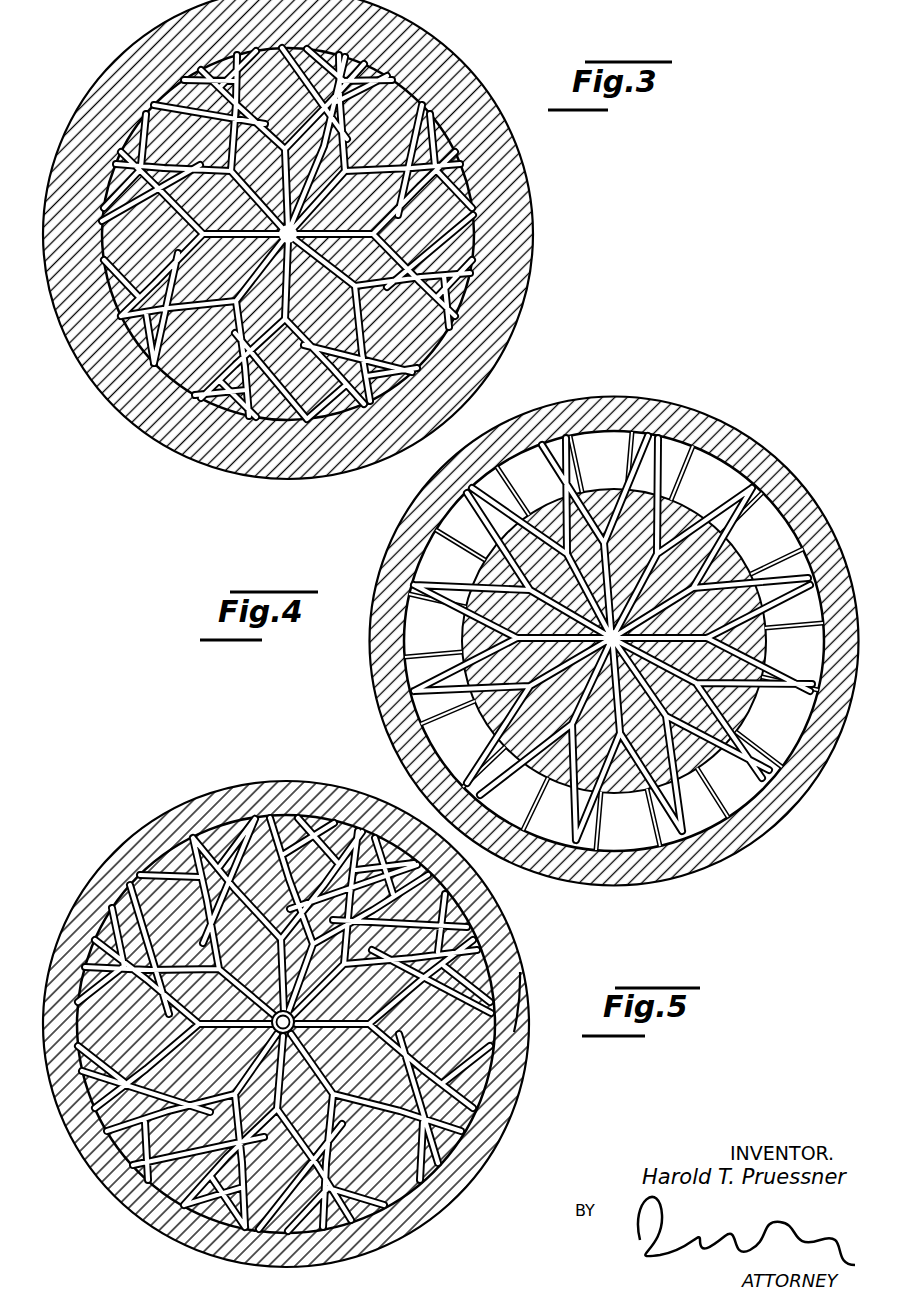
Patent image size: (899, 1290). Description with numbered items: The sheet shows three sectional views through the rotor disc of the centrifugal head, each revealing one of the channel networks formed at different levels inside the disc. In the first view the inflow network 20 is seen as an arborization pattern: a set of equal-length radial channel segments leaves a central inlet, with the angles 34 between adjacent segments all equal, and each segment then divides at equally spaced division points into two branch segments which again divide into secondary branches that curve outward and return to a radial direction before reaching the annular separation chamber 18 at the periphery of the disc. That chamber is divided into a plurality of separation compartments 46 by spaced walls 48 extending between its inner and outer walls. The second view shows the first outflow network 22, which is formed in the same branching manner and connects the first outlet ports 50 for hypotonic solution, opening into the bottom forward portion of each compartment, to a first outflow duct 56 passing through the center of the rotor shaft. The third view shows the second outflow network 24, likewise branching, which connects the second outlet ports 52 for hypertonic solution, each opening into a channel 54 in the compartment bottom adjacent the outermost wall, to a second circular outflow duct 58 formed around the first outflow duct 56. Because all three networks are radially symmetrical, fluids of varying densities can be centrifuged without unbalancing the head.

In FIG. 3, the annular separation chamber 18 is at (250, 422).
In FIG. 4, the annular separation chamber 18 is at (795, 512).
In FIG. 5, the annular separation chamber 18 is at (286, 1024).
In FIG. 3, the inflow network 20 is at (261, 32).
In FIG. 4, the first outflow network 22 is at (648, 568).
In FIG. 5, the second outflow network 24 is at (366, 1010).
In FIG. 3, the angles 34 is at (300, 262).
In FIG. 3, the separation compartments 46 is at (245, 52).
In FIG. 4, the separation compartments 46 is at (588, 436).
In FIG. 5, the separation compartments 46 is at (262, 792).
In FIG. 3, the spaced walls 48 is at (300, 46).
In FIG. 4, the spaced walls 48 is at (545, 500).
In FIG. 5, the spaced walls 48 is at (190, 812).
In FIG. 4, the first outlet port 50 is at (586, 488).
In FIG. 5, the second outlet port 52 is at (284, 1024).
In FIG. 5, the channel 54 is at (522, 984).
In FIG. 4, the first outflow duct 56 is at (628, 630).
In FIG. 5, the first outflow duct 56 is at (262, 1022).
In FIG. 5, the second circular outflow duct 58 is at (300, 1030).